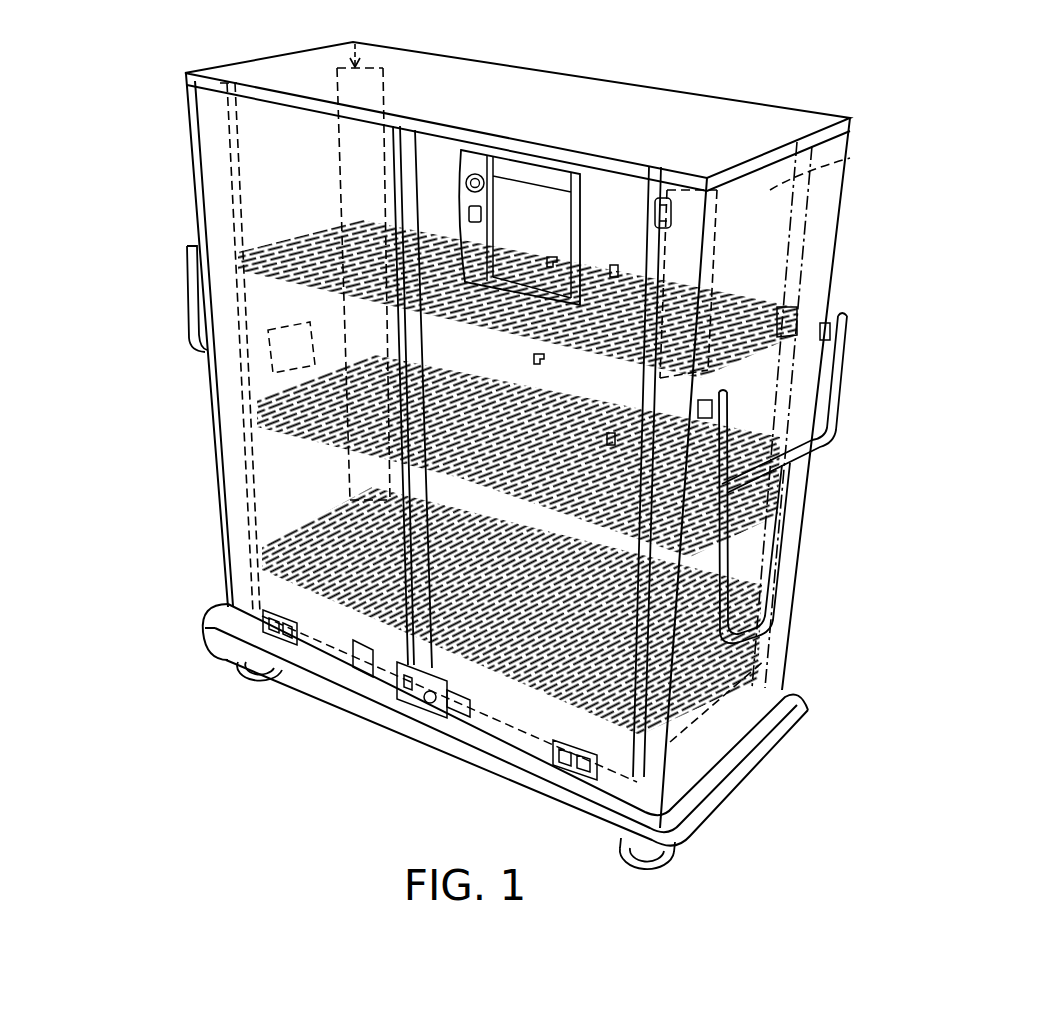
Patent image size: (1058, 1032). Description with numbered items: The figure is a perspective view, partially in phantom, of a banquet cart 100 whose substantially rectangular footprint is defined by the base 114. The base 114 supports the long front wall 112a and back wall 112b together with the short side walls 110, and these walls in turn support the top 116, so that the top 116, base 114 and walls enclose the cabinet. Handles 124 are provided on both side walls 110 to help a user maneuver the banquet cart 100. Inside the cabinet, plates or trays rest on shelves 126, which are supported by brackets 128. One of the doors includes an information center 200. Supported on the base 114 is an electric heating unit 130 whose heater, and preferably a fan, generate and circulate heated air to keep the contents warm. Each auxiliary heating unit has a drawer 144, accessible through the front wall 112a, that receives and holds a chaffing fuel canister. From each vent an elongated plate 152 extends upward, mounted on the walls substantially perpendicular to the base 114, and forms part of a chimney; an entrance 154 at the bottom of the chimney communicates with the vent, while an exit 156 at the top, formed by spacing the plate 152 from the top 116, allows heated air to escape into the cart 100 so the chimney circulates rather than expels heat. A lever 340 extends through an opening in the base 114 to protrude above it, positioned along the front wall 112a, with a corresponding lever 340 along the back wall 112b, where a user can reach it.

The banquet cart 100 is at (119, 193).
The short side walls 110 is at (753, 243).
The front wall 112a is at (247, 190).
The back wall 112b is at (843, 161).
The base 114 is at (748, 788).
The top 116 is at (740, 132).
The handles 124 is at (193, 318).
The shelves 126 is at (616, 270).
The brackets 128 is at (553, 262).
The electric heating unit 130 is at (420, 696).
The drawer 144 is at (288, 648).
The elongated plate 152 is at (373, 62).
The entrance 154 is at (788, 670).
The exit 156 is at (352, 60).
The information center 200 is at (550, 193).
The lever 340 is at (205, 628).